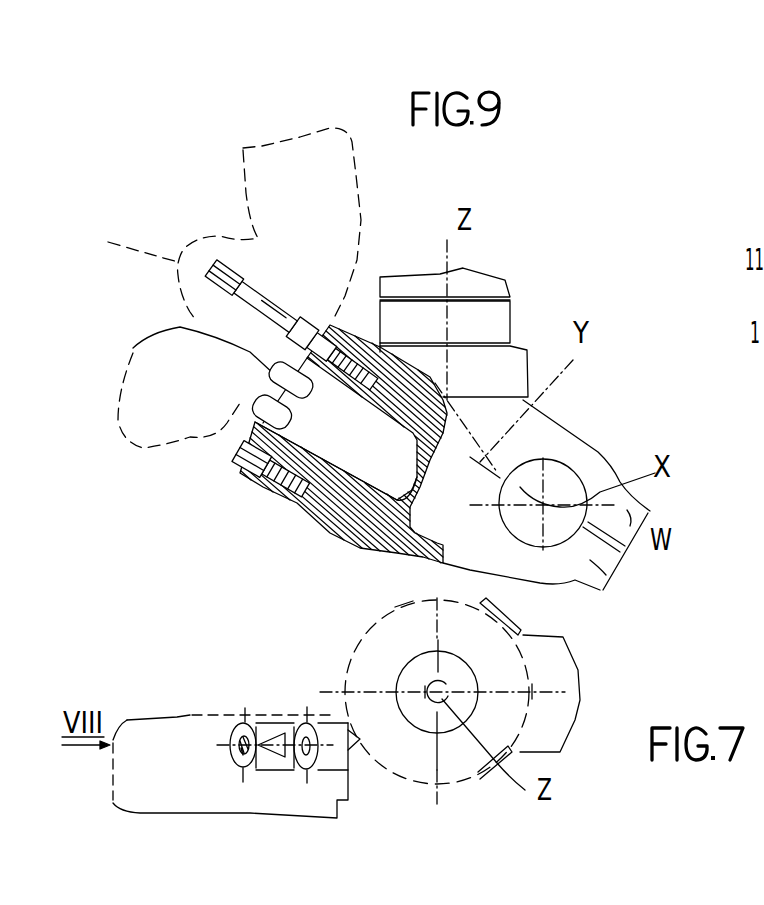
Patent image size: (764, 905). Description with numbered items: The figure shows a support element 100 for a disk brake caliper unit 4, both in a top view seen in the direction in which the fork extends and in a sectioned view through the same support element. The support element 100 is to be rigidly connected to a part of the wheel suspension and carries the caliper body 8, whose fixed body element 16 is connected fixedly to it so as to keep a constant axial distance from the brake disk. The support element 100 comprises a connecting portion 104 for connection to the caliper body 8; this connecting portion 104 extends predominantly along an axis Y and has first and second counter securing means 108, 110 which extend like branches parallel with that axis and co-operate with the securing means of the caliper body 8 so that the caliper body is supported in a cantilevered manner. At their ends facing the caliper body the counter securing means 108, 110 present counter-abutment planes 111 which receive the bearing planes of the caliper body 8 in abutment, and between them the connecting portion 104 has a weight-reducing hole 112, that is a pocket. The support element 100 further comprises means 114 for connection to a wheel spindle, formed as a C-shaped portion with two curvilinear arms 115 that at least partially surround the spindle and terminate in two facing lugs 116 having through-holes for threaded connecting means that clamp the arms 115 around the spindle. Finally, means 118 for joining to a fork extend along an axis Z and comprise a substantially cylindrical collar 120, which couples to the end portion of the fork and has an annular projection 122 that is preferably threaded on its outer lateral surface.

In FIG. 9, the caliper unit 4 is at (245, 146).
In FIG. 9, the caliper body 8 is at (134, 240).
In FIG. 9, the fixed body element 16 is at (247, 405).
In FIG. 9, the support element 100 is at (267, 373).
In FIG. 7, the support element 100 is at (237, 788).
In FIG. 9, the connecting portion 104 is at (323, 310).
In FIG. 7, the connecting portion 104 is at (357, 780).
In FIG. 9, the first counter securing means 108 is at (273, 487).
In FIG. 7, the first counter securing means 108 is at (250, 717).
In FIG. 9, the second counter securing means 110 is at (332, 318).
In FIG. 7, the second counter securing means 110 is at (317, 718).
In FIG. 7, the counter-abutment planes 111 is at (233, 767).
In FIG. 9, the weight-reducing hole 112 is at (345, 440).
In FIG. 7, the weight-reducing hole 112 is at (280, 735).
In FIG. 9, the means for connection to a spindle of a wheel 114 is at (600, 473).
In FIG. 9, the curvilinear arms 115 is at (567, 437).
In FIG. 9, the lugs 116 is at (647, 513).
In FIG. 9, the means for joining to a fork 118 is at (487, 258).
In FIG. 7, the means for joining to a fork 118 is at (470, 790).
In FIG. 9, the cylindrical collar 120 is at (490, 287).
In FIG. 9, the annular projection 122 is at (494, 327).